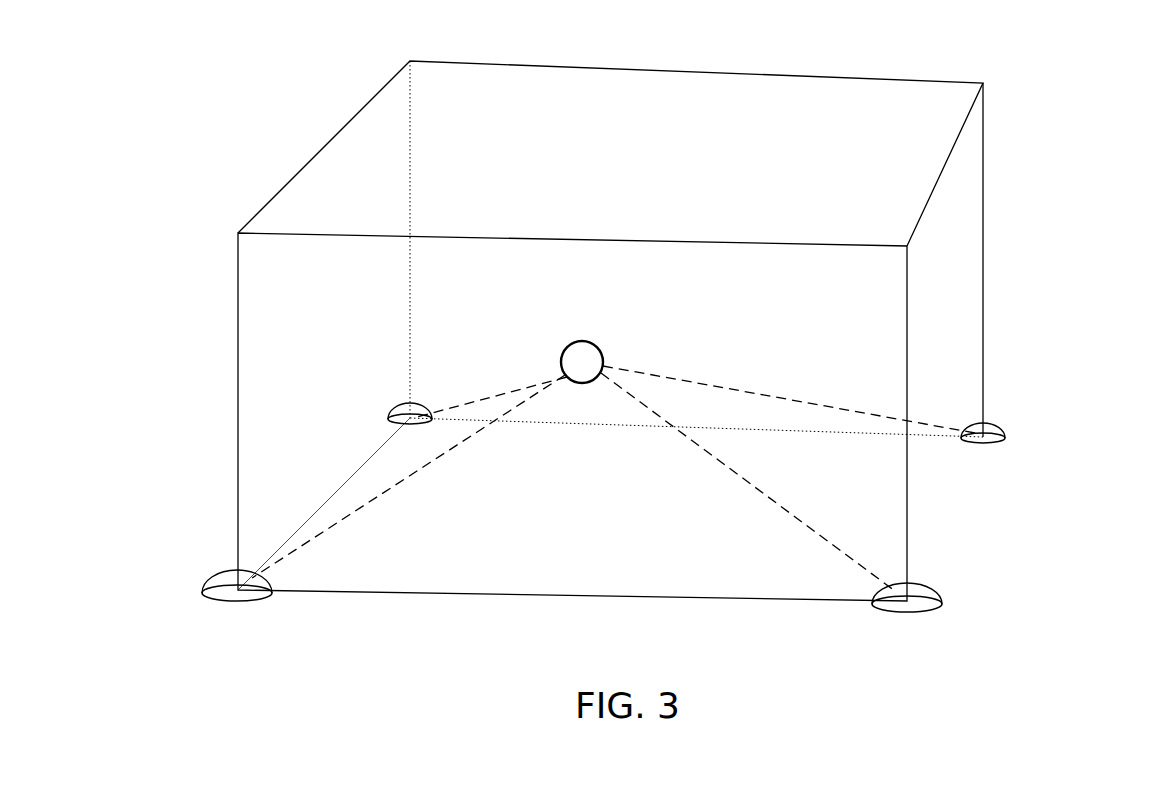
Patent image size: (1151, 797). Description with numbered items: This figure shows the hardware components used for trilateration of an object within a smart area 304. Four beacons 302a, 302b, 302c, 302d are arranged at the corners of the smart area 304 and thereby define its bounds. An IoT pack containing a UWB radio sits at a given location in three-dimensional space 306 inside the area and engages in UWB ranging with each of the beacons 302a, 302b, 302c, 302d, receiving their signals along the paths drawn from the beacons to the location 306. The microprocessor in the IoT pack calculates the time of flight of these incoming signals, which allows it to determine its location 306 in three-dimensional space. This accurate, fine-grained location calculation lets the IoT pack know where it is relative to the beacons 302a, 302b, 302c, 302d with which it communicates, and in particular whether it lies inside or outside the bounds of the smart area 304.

The smart area 304 is at (946, 229).
The location in 3D space 306 is at (580, 352).
The beacon 302a is at (202, 592).
The beacon 302b is at (942, 605).
The beacon 302c is at (397, 410).
The beacon 302d is at (1010, 437).